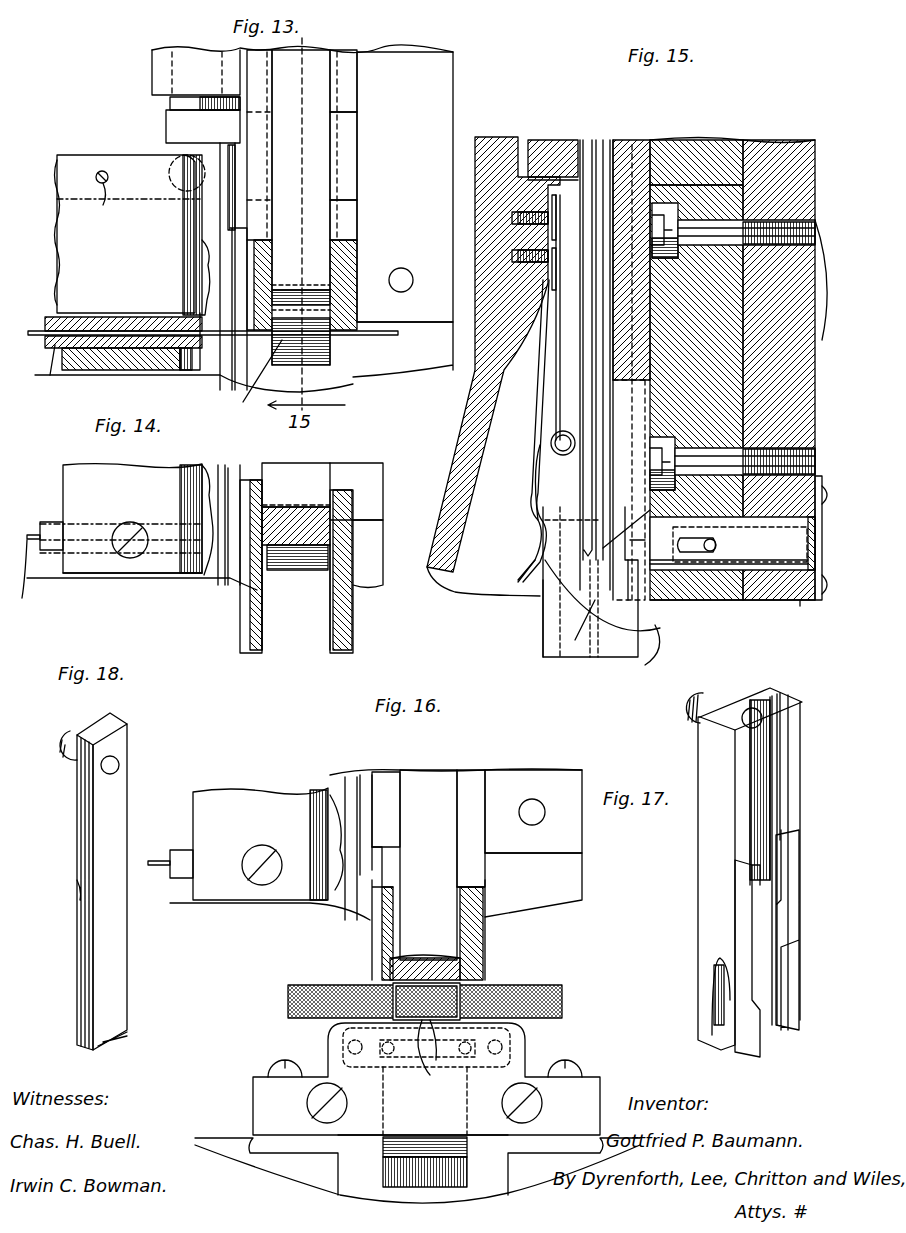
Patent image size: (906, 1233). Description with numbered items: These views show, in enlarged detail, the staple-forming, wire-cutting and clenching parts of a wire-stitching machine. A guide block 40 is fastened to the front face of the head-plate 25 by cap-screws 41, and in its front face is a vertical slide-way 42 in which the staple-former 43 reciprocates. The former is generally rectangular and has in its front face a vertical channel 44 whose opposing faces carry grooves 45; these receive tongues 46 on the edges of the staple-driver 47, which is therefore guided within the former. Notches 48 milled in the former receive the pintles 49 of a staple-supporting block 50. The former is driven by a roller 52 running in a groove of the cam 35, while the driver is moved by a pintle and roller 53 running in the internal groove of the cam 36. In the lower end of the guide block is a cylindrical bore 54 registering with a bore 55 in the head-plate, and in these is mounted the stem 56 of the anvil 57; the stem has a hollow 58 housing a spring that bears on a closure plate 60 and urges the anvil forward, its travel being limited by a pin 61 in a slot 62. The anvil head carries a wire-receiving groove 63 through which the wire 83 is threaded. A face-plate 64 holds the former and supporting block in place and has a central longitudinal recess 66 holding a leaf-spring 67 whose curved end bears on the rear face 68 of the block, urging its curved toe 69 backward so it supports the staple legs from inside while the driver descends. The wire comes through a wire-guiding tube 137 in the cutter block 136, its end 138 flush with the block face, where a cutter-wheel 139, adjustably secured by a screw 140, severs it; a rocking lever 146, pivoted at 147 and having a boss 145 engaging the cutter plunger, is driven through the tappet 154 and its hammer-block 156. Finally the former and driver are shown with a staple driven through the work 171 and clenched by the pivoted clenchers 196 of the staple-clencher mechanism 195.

In FIG. 13, the head-plate 25 is at (112, 372).
In FIG. 14, the head-plate 25 is at (145, 580).
In FIG. 15, the head-plate 25 is at (788, 150).
In FIG. 16, the head-plate 25 is at (205, 905).
In FIG. 15, the cam 35 is at (675, 145).
In FIG. 15, the cam 36 is at (542, 137).
In FIG. 13, the guide block 40 is at (317, 214).
In FIG. 14, the guide block 40 is at (368, 585).
In FIG. 15, the guide block 40 is at (710, 205).
In FIG. 16, the guide block 40 is at (533, 885).
In FIG. 15, the cap-screws 41 is at (830, 287).
In FIG. 13, the vertical slide-way 42 is at (352, 173).
In FIG. 14, the vertical slide-way 42 is at (350, 478).
In FIG. 15, the vertical slide-way 42 is at (648, 392).
In FIG. 16, the vertical slide-way 42 is at (482, 782).
In FIG. 13, the staple-former 43 is at (352, 218).
In FIG. 14, the staple-former 43 is at (345, 475).
In FIG. 15, the staple-former 43 is at (640, 330).
In FIG. 16, the staple-former 43 is at (470, 790).
In FIG. 17, the staple-former 43 is at (698, 832).
In FIG. 13, the vertical channel 44 is at (330, 150).
In FIG. 14, the vertical channel 44 is at (352, 515).
In FIG. 16, the vertical channel 44 is at (455, 826).
In FIG. 17, the vertical channel 44 is at (762, 700).
In FIG. 13, the grooves 45 is at (335, 270).
In FIG. 14, the grooves 45 is at (255, 480).
In FIG. 16, the grooves 45 is at (460, 922).
In FIG. 17, the grooves 45 is at (775, 782).
In FIG. 13, the tongues 46 is at (330, 250).
In FIG. 14, the tongues 46 is at (290, 500).
In FIG. 15, the tongues 46 is at (606, 145).
In FIG. 16, the tongues 46 is at (460, 898).
In FIG. 18, the tongues 46 is at (85, 812).
In FIG. 13, the staple-driver 47 is at (301, 224).
In FIG. 14, the staple-driver 47 is at (296, 485).
In FIG. 15, the staple-driver 47 is at (588, 140).
In FIG. 16, the staple-driver 47 is at (428, 865).
In FIG. 18, the staple-driver 47 is at (110, 835).
In FIG. 13, the notches 48 is at (262, 128).
In FIG. 15, the notches 48 is at (556, 500).
In FIG. 16, the notches 48 is at (388, 778).
In FIG. 17, the notches 48 is at (733, 940).
In FIG. 15, the pintles 49 is at (556, 448).
In FIG. 15, the staple-supporting block 50 is at (601, 582).
In FIG. 17, the roller 52 is at (710, 690).
In FIG. 18, the pintle and roller 53 is at (62, 728).
In FIG. 15, the cylindrical bore 54 is at (720, 600).
In FIG. 15, the bore 55 is at (802, 602).
In FIG. 15, the anvil stem 56 is at (732, 543).
In FIG. 13, the anvil 57 is at (318, 360).
In FIG. 14, the anvil 57 is at (302, 572).
In FIG. 15, the anvil 57 is at (628, 515).
In FIG. 15, the hollow 58 is at (732, 463).
In FIG. 15, the closure plate 60 is at (818, 480).
In FIG. 15, the pin 61 is at (724, 551).
In FIG. 15, the slot 62 is at (705, 540).
In FIG. 13, the wire-receiving groove 63 is at (250, 377).
In FIG. 15, the wire-receiving groove 63 is at (571, 622).
In FIG. 15, the face-plate 64 is at (480, 404).
In FIG. 15, the central longitudinal recess 66 is at (507, 498).
In FIG. 15, the leaf-spring 67 is at (525, 566).
In FIG. 15, the rear face 68 is at (540, 615).
In FIG. 15, the curved toe 69 is at (656, 657).
In FIG. 13, the wire 83 is at (378, 333).
In FIG. 14, the wire 83 is at (33, 575).
In FIG. 16, the wire 83 is at (162, 860).
In FIG. 13, the cutter block 136 is at (124, 256).
In FIG. 14, the cutter block 136 is at (142, 591).
In FIG. 13, the wire-guiding tube 137 is at (189, 373).
In FIG. 14, the wire-guiding tube 137 is at (50, 522).
In FIG. 16, the wire-guiding tube 137 is at (180, 865).
In FIG. 14, the end of the tube 138 is at (130, 505).
In FIG. 16, the end of the tube 138 is at (258, 848).
In FIG. 13, the cutter-wheel 139 is at (192, 248).
In FIG. 14, the cutter-wheel 139 is at (193, 470).
In FIG. 16, the cutter-wheel 139 is at (335, 905).
In FIG. 13, the screw 140 is at (205, 288).
In FIG. 14, the screw 140 is at (205, 575).
In FIG. 16, the screw 140 is at (338, 810).
In FIG. 13, the boss 145 is at (170, 174).
In FIG. 13, the rocking lever 146 is at (62, 155).
In FIG. 13, the pivot 147 is at (97, 206).
In FIG. 13, the tappet 154 is at (185, 103).
In FIG. 13, the hammer-block 156 is at (203, 126).
In FIG. 16, the work 171 is at (532, 990).
In FIG. 16, the staple-clencher mechanism 195 is at (417, 1113).
In FIG. 16, the pivoted clenchers 196 is at (403, 1072).